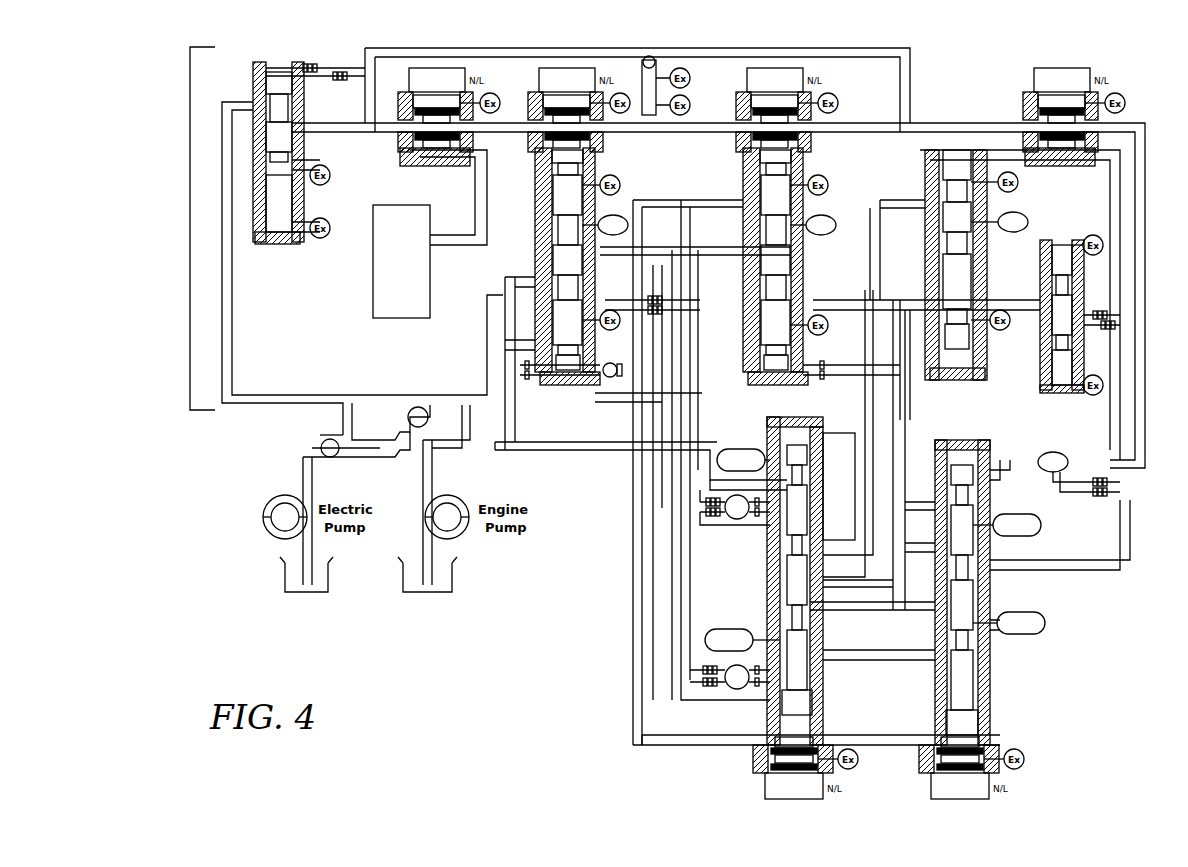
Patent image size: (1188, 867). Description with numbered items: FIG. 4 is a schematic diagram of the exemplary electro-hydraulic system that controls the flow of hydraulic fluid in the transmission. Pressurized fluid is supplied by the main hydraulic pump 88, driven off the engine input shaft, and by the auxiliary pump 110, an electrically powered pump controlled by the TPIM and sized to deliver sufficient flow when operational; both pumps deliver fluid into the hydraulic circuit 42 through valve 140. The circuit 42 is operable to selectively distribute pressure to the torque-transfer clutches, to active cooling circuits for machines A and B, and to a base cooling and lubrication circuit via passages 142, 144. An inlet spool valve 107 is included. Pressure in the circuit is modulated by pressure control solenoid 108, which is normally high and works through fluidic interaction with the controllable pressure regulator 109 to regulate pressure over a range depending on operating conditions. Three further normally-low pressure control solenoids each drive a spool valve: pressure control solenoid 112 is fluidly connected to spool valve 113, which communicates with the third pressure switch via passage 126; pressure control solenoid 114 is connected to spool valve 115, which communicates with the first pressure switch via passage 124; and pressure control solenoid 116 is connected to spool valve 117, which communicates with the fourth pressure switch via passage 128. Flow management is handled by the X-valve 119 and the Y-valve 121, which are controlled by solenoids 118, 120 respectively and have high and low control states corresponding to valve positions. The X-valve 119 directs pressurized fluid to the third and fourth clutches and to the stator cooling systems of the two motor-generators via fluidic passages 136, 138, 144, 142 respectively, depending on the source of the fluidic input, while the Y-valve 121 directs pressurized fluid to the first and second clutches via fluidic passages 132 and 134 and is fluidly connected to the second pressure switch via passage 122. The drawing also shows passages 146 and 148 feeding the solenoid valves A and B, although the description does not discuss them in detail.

The hydraulic circuit 42 is at (190, 117).
The main hydraulic pump 88 is at (455, 538).
The inlet spool valve 107 is at (280, 245).
The pressure control solenoid PCS1 108 is at (425, 68).
The controllable pressure regulator 109 is at (430, 262).
The auxiliary pump 110 is at (280, 540).
The pressure control solenoid PCS2 112 is at (1040, 68).
The spool valve 113 is at (960, 252).
The pressure control solenoid PCS3 114 is at (762, 68).
The spool valve 115 is at (766, 170).
The pressure control solenoid PCS4 116 is at (555, 68).
The spool valve 117 is at (565, 200).
The solenoid 118 is at (780, 790).
The X-valve 119 is at (790, 572).
The solenoid 120 is at (945, 790).
The Y-valve 121 is at (965, 668).
The passage 122 is at (1065, 455).
The passage 124 is at (830, 215).
The passage 126 is at (1020, 212).
The passage 128 is at (622, 215).
The fluidic passage 132 is at (1045, 623).
The fluidic passage 134 is at (1041, 525).
The fluidic passage 136 is at (728, 629).
The fluidic passage 138 is at (740, 449).
The valve 140 is at (320, 442).
The passage 142 is at (735, 690).
The passage 144 is at (733, 520).
The passage 146 is at (712, 515).
The passage 148 is at (705, 670).